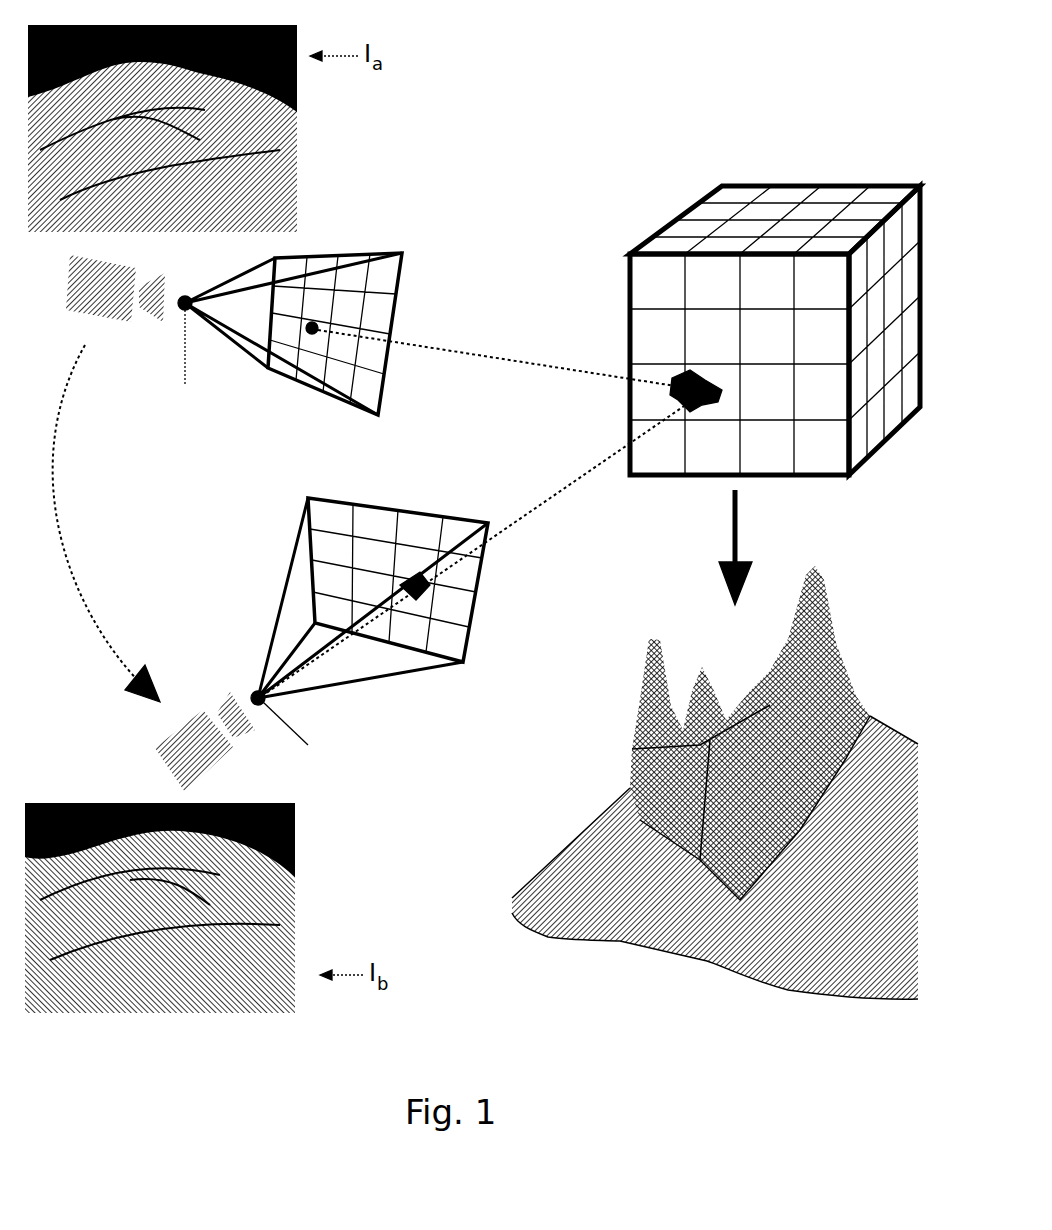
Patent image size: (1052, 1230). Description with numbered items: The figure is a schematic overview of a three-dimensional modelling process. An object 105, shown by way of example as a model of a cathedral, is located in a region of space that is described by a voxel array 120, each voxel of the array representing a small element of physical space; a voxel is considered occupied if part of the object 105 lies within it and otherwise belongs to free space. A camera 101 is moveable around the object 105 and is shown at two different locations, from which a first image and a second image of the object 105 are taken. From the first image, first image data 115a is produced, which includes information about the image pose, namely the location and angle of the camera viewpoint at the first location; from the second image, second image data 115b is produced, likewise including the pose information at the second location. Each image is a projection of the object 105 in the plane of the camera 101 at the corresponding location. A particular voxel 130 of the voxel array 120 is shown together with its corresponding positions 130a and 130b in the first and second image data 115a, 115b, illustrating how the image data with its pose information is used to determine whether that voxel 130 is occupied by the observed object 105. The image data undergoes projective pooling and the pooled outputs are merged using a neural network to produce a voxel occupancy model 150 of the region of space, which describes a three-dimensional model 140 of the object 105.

The camera 101 is at (66, 300).
The object 105 is at (203, 111).
The first image data 115a is at (410, 302).
The second image data 115b is at (497, 575).
The voxel array 120 is at (810, 147).
The voxel 130 is at (712, 388).
The projection of voxel onto first image 130a is at (318, 330).
The projection of voxel onto second image 130b is at (417, 595).
The 3D model 140 is at (702, 874).
The voxel occupancy model 150 is at (796, 1006).